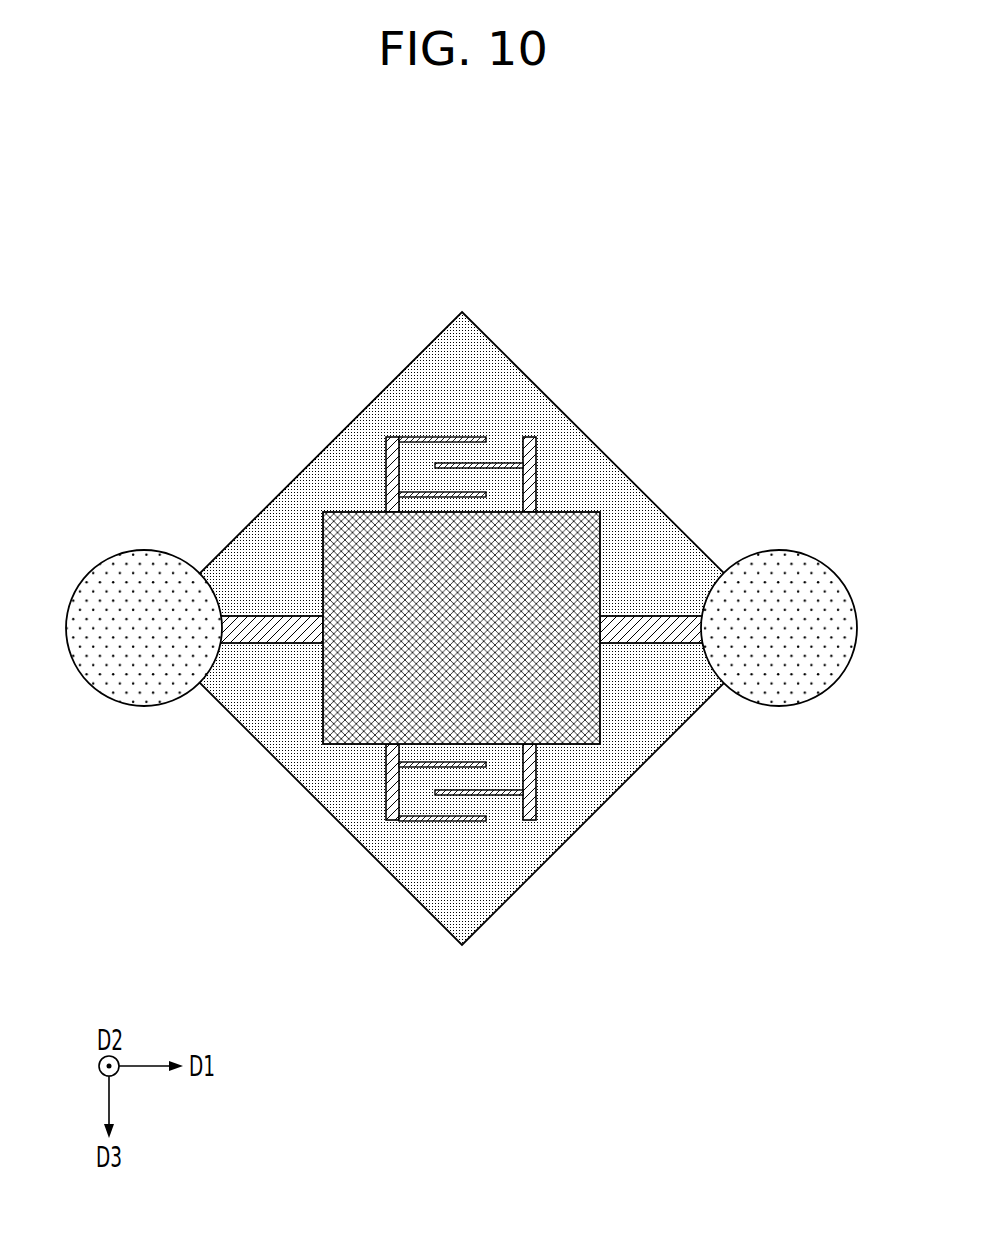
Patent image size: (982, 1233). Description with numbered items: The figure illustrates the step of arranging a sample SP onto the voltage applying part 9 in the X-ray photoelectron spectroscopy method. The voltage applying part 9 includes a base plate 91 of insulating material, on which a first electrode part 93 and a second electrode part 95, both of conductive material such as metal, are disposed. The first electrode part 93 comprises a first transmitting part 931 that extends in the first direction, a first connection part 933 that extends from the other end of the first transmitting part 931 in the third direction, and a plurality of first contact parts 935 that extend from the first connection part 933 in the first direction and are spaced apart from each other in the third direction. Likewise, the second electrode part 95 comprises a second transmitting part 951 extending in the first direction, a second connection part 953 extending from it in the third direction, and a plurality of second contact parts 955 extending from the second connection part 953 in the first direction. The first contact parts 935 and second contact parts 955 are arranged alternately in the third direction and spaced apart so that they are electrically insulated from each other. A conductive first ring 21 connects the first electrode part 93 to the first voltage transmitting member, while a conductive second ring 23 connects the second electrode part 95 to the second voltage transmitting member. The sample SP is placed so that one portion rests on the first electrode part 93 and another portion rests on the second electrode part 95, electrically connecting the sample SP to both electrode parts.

The voltage applying part 9 is at (562, 324).
The base plate 91 is at (567, 440).
The sample SP is at (355, 515).
The first electrode part 93 is at (343, 829).
The first transmitting part 931 is at (265, 635).
The first connection part 933 is at (385, 790).
The first contact part 935 is at (437, 821).
The second electrode part 95 is at (579, 829).
The second transmitting part 951 is at (653, 635).
The second connection part 953 is at (538, 790).
The second contact part 955 is at (500, 795).
The first ring 21 is at (147, 550).
The second ring 23 is at (780, 550).